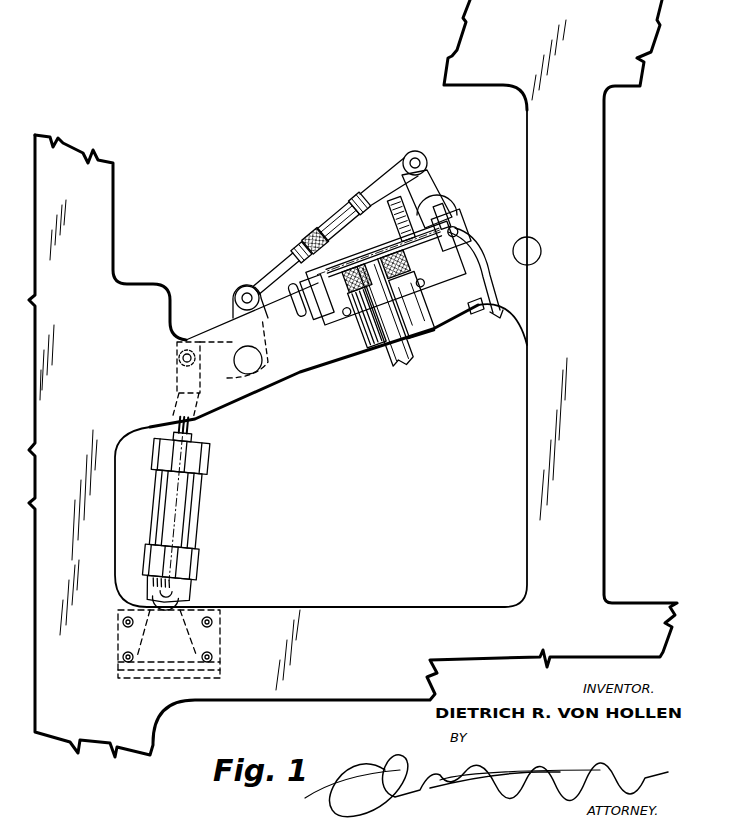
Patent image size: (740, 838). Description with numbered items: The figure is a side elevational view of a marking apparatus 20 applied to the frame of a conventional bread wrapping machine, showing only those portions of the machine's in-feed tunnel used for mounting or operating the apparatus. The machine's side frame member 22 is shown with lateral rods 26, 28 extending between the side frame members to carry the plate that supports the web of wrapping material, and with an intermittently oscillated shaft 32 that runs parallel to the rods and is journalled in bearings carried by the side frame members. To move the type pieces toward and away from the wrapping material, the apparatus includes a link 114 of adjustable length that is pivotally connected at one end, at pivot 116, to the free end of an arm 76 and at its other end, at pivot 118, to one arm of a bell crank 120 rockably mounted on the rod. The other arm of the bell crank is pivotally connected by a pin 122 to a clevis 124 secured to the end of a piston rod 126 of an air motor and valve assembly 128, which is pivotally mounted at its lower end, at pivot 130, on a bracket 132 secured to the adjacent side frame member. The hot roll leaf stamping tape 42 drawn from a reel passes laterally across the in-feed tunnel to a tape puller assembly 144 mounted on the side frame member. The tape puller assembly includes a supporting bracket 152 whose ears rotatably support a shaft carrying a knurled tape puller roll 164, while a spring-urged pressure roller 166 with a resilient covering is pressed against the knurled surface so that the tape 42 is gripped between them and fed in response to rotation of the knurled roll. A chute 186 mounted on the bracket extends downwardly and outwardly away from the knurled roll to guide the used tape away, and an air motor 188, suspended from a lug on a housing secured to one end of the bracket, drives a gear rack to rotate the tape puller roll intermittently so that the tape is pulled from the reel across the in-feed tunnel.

The marking apparatus 20 is at (351, 187).
The side frame member 22 is at (535, 188).
The lateral rod 26 is at (245, 367).
The lateral rod 28 is at (527, 265).
The intermittently oscillated shaft 32 is at (428, 207).
The hot roll leaf stamping tape 42 is at (405, 360).
The arm 76 is at (428, 178).
The link 114 is at (348, 211).
The pivotal connection 116 is at (416, 151).
The pivotal connection 118 is at (251, 285).
The bell crank 120 is at (242, 312).
The pin 122 is at (178, 358).
The clevis 124 is at (177, 380).
The piston rod 126 is at (196, 423).
The air motor and valve assembly 128 is at (200, 500).
The pivotal mounting 130 is at (178, 603).
The bracket 132 is at (220, 632).
The tape puller assembly 144 is at (351, 333).
The supporting bracket 152 is at (327, 317).
The knurled tape puller roll 164 is at (297, 254).
The pressure roller 166 is at (326, 232).
The chute 186 is at (420, 331).
The air motor 188 is at (470, 252).